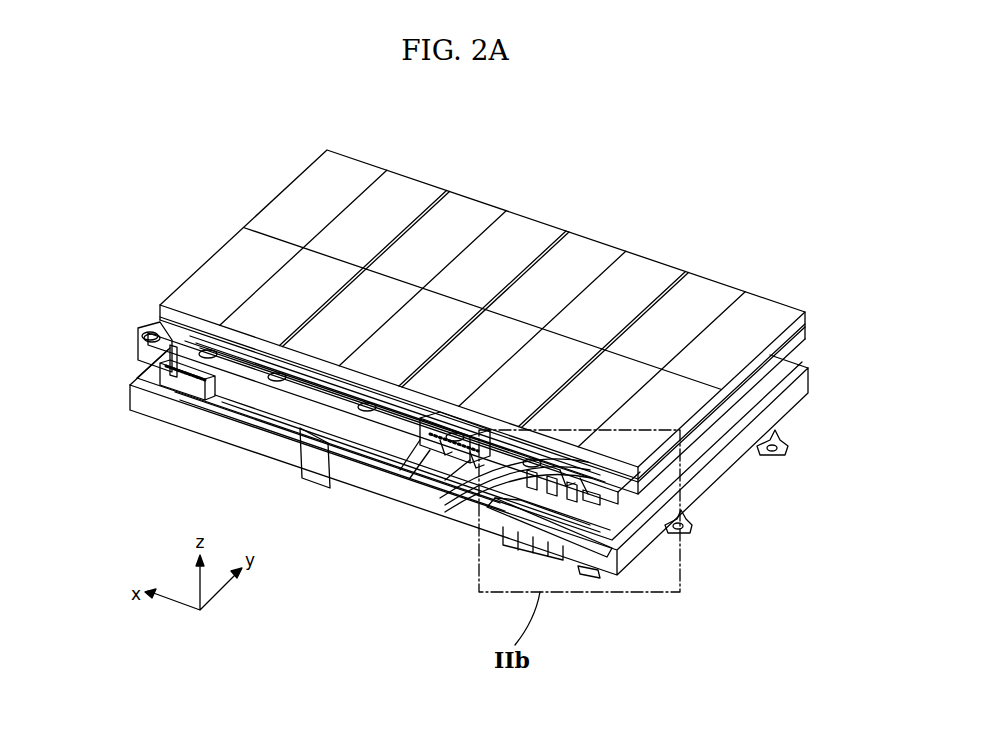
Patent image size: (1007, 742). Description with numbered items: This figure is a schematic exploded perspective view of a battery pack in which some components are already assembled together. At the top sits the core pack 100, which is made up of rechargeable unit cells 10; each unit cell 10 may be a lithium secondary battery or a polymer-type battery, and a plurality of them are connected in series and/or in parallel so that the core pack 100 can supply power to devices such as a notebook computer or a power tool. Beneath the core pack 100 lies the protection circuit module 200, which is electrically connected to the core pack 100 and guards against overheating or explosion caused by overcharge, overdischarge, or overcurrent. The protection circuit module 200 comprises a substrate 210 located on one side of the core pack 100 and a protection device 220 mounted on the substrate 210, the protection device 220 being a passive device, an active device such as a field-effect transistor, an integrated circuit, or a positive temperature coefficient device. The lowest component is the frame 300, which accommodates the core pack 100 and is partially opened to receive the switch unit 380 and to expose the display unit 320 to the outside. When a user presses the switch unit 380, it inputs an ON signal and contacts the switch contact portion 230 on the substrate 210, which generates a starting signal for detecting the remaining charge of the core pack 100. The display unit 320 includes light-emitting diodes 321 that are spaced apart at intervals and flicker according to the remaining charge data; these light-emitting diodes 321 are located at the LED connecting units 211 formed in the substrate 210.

The unit cell 10 is at (222, 232).
The core pack 100 is at (470, 322).
The protection circuit module 200 is at (418, 458).
The substrate 210 is at (147, 345).
The LED connecting unit 211 is at (455, 507).
The protection device 220 is at (418, 440).
The switch contact portion 230 is at (594, 498).
The frame 300 is at (444, 507).
The display unit 320 is at (487, 527).
The light-emitting diode 321 is at (520, 520).
The switch unit 380 is at (588, 577).